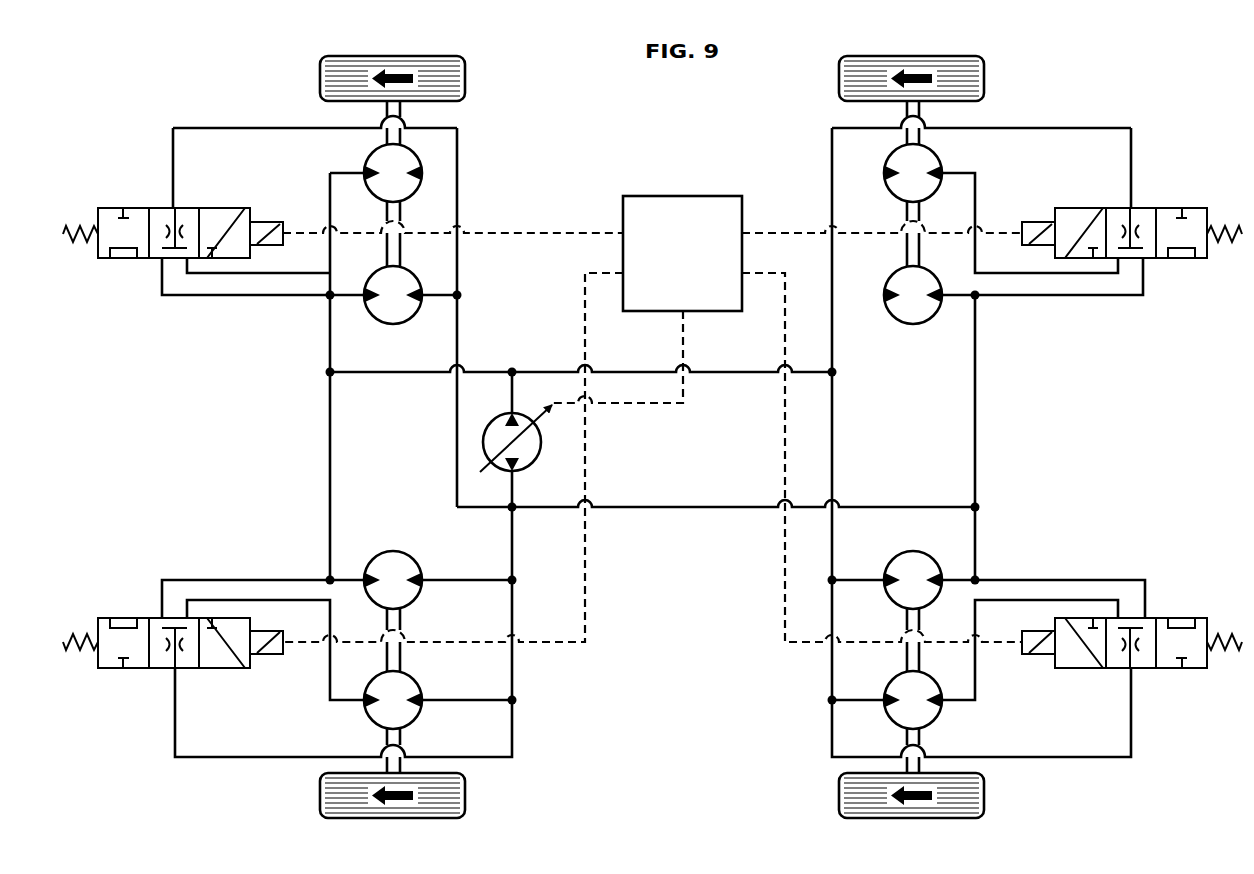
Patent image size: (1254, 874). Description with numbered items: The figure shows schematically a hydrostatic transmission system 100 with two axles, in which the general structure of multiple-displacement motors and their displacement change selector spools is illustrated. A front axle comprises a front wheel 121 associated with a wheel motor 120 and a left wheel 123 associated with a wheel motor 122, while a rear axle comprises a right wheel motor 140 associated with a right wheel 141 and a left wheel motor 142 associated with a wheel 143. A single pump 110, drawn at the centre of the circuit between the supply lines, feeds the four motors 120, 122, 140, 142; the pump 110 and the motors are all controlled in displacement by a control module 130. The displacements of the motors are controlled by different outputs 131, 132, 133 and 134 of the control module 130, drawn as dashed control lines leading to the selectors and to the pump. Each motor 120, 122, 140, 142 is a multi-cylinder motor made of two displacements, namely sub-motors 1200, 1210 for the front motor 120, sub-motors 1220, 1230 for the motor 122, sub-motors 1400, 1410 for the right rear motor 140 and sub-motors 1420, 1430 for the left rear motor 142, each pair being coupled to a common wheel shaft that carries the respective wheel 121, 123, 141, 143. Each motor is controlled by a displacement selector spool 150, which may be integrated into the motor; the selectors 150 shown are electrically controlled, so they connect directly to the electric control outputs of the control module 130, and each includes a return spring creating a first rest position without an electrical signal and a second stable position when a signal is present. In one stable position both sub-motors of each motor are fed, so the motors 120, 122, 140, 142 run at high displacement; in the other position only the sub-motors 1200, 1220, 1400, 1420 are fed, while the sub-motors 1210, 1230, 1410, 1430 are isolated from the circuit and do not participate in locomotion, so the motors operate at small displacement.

The hydraulic drive system 100 is at (543, 216).
The pump 110 is at (482, 413).
The wheel motor 120 is at (410, 250).
The front wheel 121 is at (470, 80).
The wheel motor 122 is at (365, 653).
The left wheel 123 is at (470, 796).
The control module 130 is at (697, 263).
The output 131 is at (567, 232).
The output 132 is at (583, 323).
The output 133 is at (768, 232).
The output 134 is at (778, 276).
The right wheel motor 140 is at (888, 250).
The right wheel 141 is at (990, 80).
The left wheel motor 142 is at (942, 653).
The wheel 143 is at (990, 797).
The displacement selector spool 150 is at (143, 187).
The sub-motor 1200 is at (368, 327).
The sub-motor 1210 is at (368, 150).
The sub-motor 1220 is at (393, 538).
The sub-motor 1230 is at (367, 735).
The sub-motor 1400 is at (938, 148).
The sub-motor 1410 is at (913, 337).
The sub-motor 1420 is at (947, 555).
The sub-motor 1430 is at (937, 735).